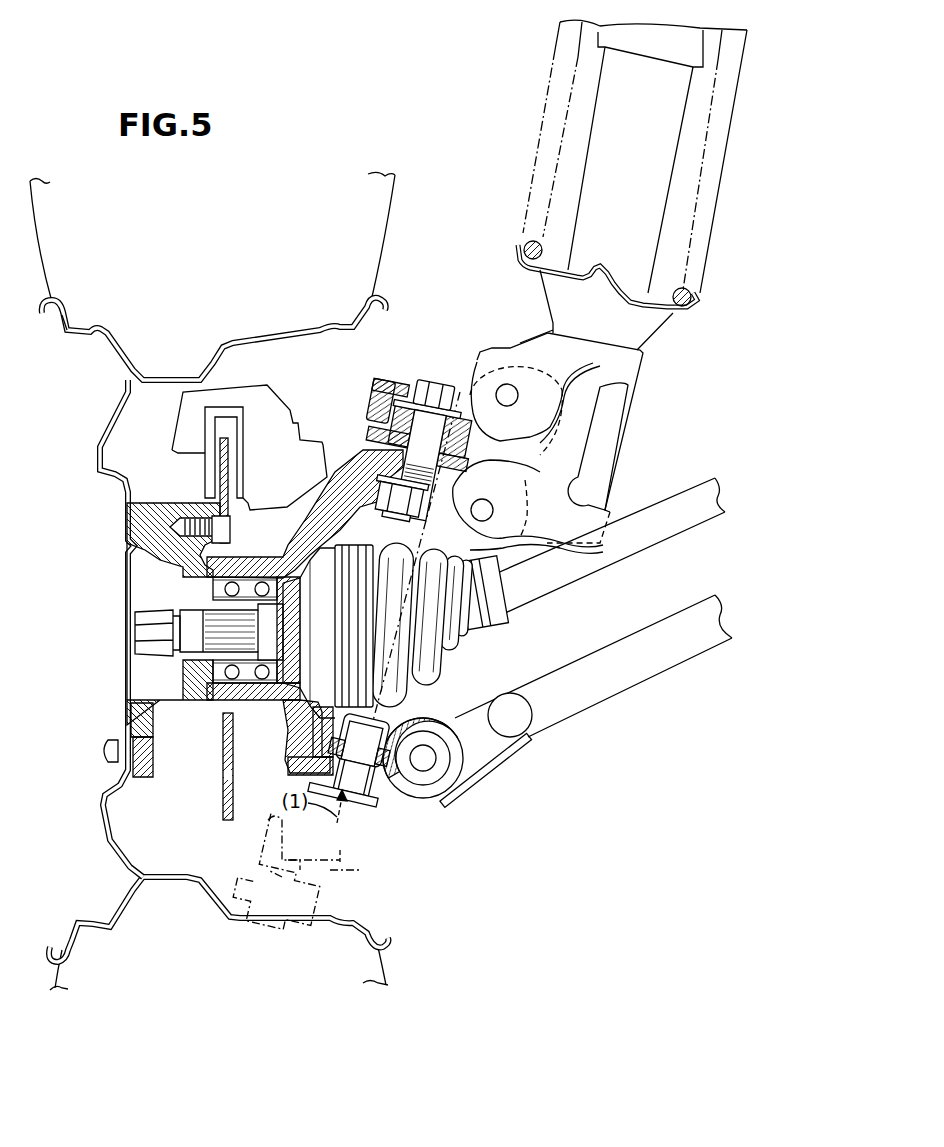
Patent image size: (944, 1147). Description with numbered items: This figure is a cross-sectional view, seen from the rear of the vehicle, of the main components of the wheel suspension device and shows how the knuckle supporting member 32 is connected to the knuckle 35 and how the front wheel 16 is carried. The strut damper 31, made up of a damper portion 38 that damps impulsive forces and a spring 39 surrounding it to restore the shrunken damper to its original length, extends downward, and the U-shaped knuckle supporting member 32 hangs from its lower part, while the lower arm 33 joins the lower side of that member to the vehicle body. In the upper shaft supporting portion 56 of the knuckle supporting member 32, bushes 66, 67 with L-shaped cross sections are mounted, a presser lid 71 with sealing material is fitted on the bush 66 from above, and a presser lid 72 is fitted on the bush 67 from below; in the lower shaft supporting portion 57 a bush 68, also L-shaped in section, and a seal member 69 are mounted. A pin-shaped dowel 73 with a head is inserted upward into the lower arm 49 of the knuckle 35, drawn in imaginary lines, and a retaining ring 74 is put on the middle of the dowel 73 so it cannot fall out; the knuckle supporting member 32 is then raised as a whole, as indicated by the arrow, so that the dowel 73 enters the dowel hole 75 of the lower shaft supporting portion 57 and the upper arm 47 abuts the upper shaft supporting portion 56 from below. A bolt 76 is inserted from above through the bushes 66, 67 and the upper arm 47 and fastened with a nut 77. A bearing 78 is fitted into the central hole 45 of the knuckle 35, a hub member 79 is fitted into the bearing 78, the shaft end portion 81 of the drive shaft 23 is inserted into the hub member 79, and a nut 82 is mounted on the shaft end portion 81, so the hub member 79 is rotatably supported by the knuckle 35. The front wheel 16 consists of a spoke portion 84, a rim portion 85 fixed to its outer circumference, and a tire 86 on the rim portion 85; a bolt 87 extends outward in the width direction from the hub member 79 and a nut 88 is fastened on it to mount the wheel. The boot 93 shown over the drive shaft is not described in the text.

The front wheel 16 is at (302, 162).
The drive shaft 23 is at (688, 528).
The strut damper 31 is at (598, 184).
The knuckle supporting member 32 is at (462, 362).
The lower arm 33 is at (645, 682).
The knuckle 35 is at (282, 877).
The damper portion 38 is at (600, 108).
The spring 39 is at (560, 50).
The central hole 45 is at (213, 672).
The upper arm 47 is at (492, 515).
The lower arm 49 is at (267, 862).
The upper shaft supporting portion 56 is at (383, 388).
The lower shaft supporting portion 57 is at (313, 741).
The bush 66 is at (478, 440).
The bush 67 is at (470, 448).
The bush 68 is at (450, 757).
The seal member 69 is at (440, 785).
The presser lid 71 is at (560, 366).
The presser lid 72 is at (470, 483).
The dowel 73 is at (355, 797).
The retaining ring 74 is at (360, 867).
The dowel hole 75 is at (363, 737).
The bolt 76 is at (434, 383).
The nut 77 is at (470, 530).
The bearing 78 is at (213, 590).
The hub member 79 is at (157, 697).
The shaft end portion 81 is at (182, 628).
The nut 82 is at (152, 643).
The spoke portion 84 is at (125, 515).
The rim portion 85 is at (87, 345).
The tire 86 is at (390, 236).
The bolt 87 is at (136, 760).
The nut 88 is at (105, 756).
The constant velocity joint boot 93 is at (467, 648).